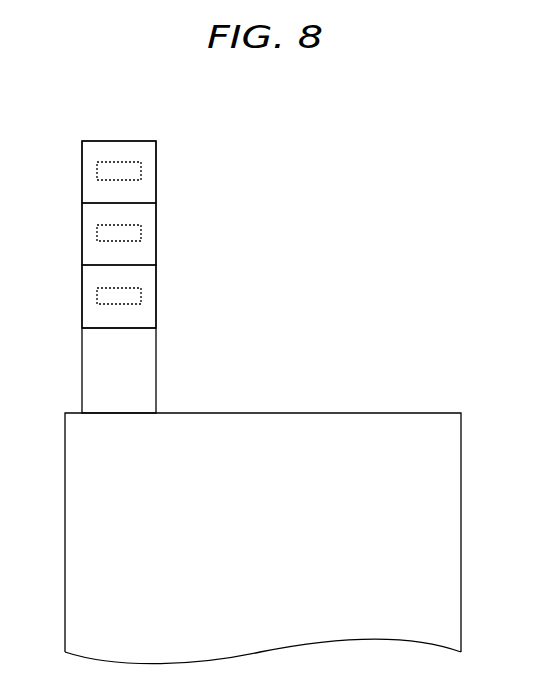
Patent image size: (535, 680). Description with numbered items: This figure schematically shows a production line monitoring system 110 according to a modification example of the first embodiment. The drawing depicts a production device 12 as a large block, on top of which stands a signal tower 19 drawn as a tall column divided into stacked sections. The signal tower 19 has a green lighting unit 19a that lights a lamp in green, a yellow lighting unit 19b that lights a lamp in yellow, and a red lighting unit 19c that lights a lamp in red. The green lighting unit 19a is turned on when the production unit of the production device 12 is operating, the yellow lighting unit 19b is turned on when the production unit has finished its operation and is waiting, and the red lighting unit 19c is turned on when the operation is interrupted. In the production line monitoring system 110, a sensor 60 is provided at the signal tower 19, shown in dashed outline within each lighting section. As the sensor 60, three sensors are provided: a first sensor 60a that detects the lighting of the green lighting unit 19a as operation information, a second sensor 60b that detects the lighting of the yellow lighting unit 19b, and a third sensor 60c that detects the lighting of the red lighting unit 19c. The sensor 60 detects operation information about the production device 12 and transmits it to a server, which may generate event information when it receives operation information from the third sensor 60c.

The production line monitoring system 110 is at (458, 331).
The production device 12 is at (454, 394).
The signal tower 19 is at (160, 130).
The green lighting unit 19a is at (95, 282).
The yellow lighting unit 19b is at (92, 213).
The red lighting unit 19c is at (92, 153).
The sensor 60 is at (160, 222).
The first sensor 60a is at (130, 299).
The second sensor 60b is at (130, 236).
The third sensor 60c is at (130, 173).